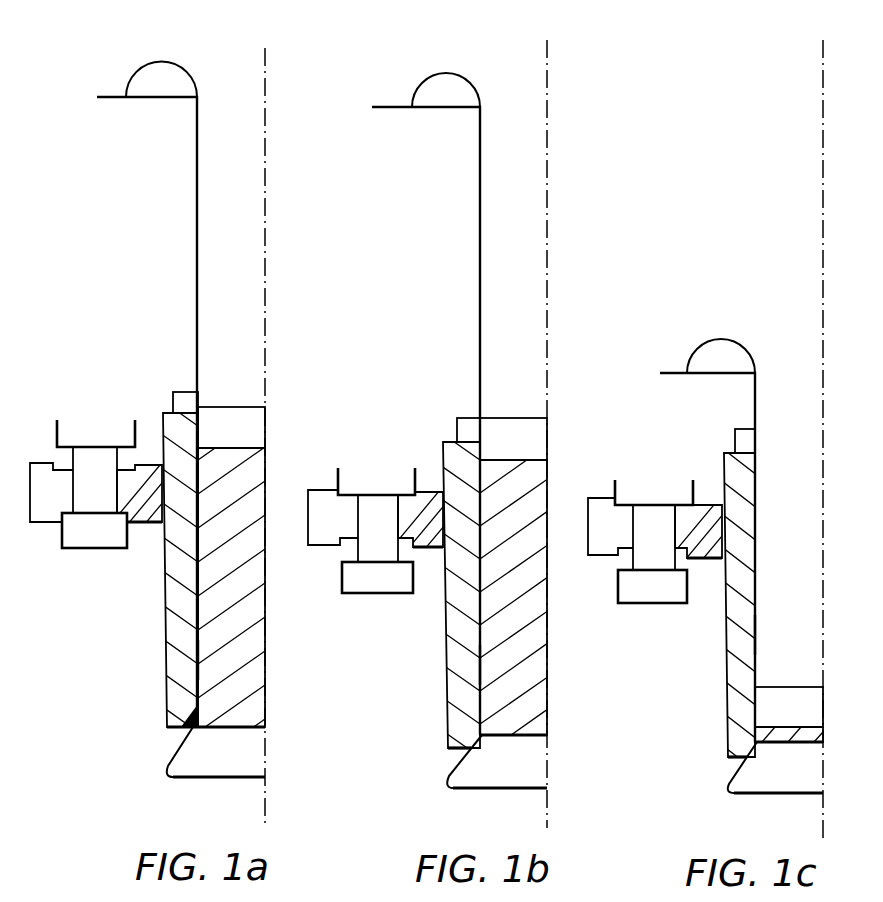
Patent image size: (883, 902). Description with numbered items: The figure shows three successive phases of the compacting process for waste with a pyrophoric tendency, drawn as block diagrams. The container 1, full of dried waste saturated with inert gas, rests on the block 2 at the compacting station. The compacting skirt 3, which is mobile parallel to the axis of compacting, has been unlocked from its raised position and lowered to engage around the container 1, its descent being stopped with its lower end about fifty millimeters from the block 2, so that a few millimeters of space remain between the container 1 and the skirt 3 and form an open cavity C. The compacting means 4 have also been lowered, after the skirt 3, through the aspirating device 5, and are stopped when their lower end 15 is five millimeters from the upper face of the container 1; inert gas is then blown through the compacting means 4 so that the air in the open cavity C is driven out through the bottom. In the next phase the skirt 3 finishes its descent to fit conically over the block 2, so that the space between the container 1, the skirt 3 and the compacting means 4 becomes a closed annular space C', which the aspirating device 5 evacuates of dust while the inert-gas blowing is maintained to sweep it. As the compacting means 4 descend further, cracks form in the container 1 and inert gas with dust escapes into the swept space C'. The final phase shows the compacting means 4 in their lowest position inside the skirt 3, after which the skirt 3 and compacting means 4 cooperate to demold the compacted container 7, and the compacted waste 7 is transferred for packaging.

In FIG. 1A, the container 1 is at (257, 627).
In FIG. 1B, the container 1 is at (542, 723).
In FIG. 1A, the block 2 is at (163, 775).
In FIG. 1A, the compacting skirt 3 is at (175, 597).
In FIG. 1C, the compacting skirt 3 is at (735, 730).
In FIG. 1A, the compacting means 4 is at (190, 342).
In FIG. 1C, the compacting means 4 is at (764, 404).
In FIG. 1A, the aspirating device 5 is at (180, 400).
In FIG. 1C, the aspirating device 5 is at (740, 438).
In FIG. 1C, the compacted container 7 is at (815, 733).
In FIG. 1A, the lower end 15 is at (253, 423).
In FIG. 1B, the lower end 15 is at (533, 440).
In FIG. 1C, the lower end 15 is at (812, 705).
In FIG. 1A, the open cavity C is at (161, 660).
In FIG. 1B, the annular space C' is at (442, 665).
In FIG. 1C, the annular space C' is at (719, 648).